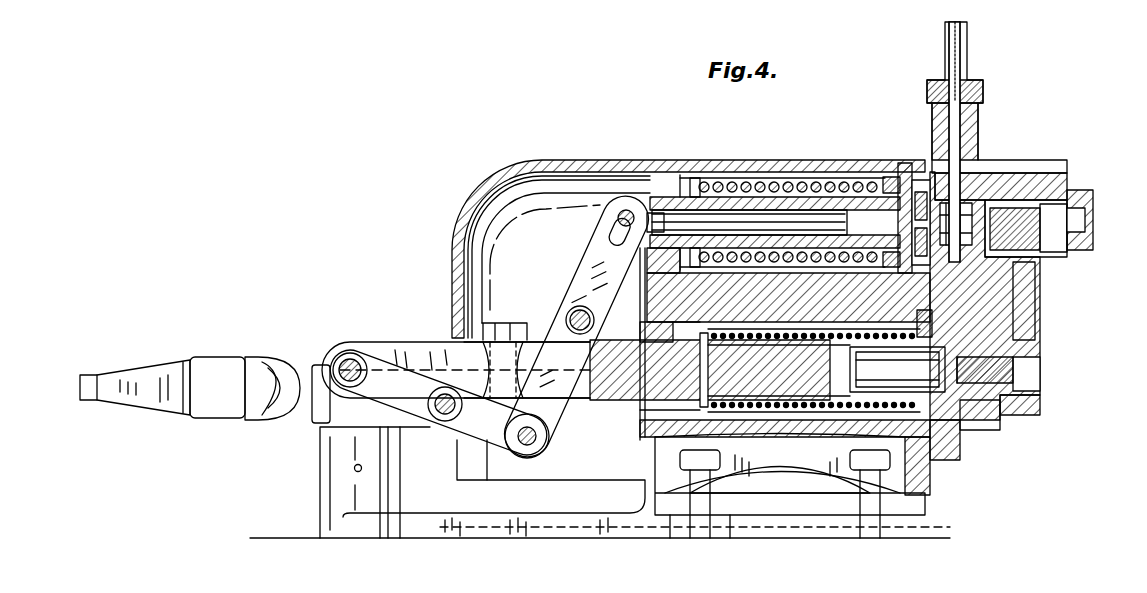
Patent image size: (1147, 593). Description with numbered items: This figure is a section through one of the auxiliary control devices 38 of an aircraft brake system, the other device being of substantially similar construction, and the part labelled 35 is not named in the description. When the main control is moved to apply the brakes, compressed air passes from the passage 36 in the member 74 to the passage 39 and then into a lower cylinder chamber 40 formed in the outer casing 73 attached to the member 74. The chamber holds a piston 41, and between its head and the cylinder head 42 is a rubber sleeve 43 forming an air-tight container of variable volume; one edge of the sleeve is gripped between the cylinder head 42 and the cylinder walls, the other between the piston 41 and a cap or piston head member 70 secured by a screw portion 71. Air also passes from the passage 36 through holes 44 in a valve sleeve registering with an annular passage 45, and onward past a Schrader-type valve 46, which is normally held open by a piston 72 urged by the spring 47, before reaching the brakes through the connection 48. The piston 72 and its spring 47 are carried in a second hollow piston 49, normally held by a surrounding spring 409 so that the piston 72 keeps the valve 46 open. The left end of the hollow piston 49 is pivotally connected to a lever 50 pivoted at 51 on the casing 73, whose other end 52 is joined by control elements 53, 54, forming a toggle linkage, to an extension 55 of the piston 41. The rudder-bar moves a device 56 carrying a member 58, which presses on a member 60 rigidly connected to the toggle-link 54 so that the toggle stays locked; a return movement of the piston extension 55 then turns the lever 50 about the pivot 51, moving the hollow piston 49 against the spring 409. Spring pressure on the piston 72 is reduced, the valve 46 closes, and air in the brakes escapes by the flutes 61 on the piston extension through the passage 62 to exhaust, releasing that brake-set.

The lug 35 is at (1042, 335).
The passage 36 is at (1032, 313).
The auxiliary control device 38 is at (455, 241).
The passage 39 is at (1040, 370).
The lower cylinder chamber 40 is at (945, 422).
The piston 41 is at (740, 360).
The cylinder head 42 is at (935, 380).
The rubber sleeve 43 is at (898, 418).
The holes 44 is at (1042, 252).
The annular passage 45 is at (1028, 198).
The valve 46 is at (985, 198).
The spring 47 is at (795, 197).
The connection 48 is at (968, 61).
The hollow piston 49 is at (712, 182).
The lever 50 is at (605, 250).
The pivot 51 is at (565, 312).
The lever end 52 is at (548, 442).
The control element 53 is at (512, 438).
The toggle-link 54 is at (400, 385).
The piston extension 55 is at (412, 343).
The device 56 is at (150, 396).
The member 58 is at (278, 421).
The member 60 is at (318, 412).
The flutes 61 is at (925, 188).
The passage 62 is at (915, 176).
The cap or piston head member 70 is at (897, 369).
The screw portion 71 is at (930, 363).
The piston 72 is at (840, 186).
The outer casing 73 is at (778, 440).
The member 74 is at (995, 396).
The spring 409 is at (692, 162).